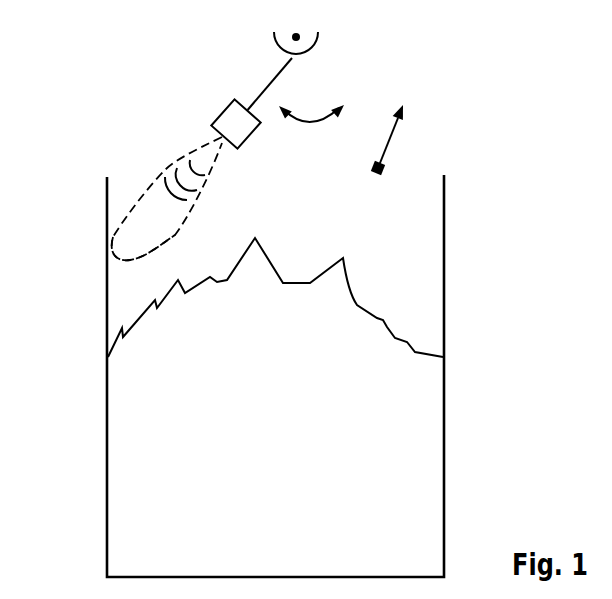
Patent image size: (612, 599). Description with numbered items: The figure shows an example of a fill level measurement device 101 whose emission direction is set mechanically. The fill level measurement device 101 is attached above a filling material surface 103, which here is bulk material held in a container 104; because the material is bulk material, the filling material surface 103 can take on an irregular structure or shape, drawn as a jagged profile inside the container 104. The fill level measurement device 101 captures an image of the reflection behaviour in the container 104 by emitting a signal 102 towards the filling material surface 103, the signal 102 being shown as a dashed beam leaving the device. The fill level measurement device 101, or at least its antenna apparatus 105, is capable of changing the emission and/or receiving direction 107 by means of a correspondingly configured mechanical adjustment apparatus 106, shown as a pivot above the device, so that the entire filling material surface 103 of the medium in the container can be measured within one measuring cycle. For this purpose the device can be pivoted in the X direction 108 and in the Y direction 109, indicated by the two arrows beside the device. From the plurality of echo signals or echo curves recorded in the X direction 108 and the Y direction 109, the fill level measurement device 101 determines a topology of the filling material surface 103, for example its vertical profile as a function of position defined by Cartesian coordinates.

The fill level measurement device 101 is at (237, 100).
The signal 102 is at (167, 179).
The filling material surface 103 is at (357, 300).
The container 104 is at (444, 450).
The antenna apparatus 105 is at (223, 150).
The mechanical adjustment apparatus 106 is at (318, 32).
The emission and/or receiving direction 107 is at (135, 233).
The X direction 108 is at (323, 120).
The Y direction 109 is at (390, 140).